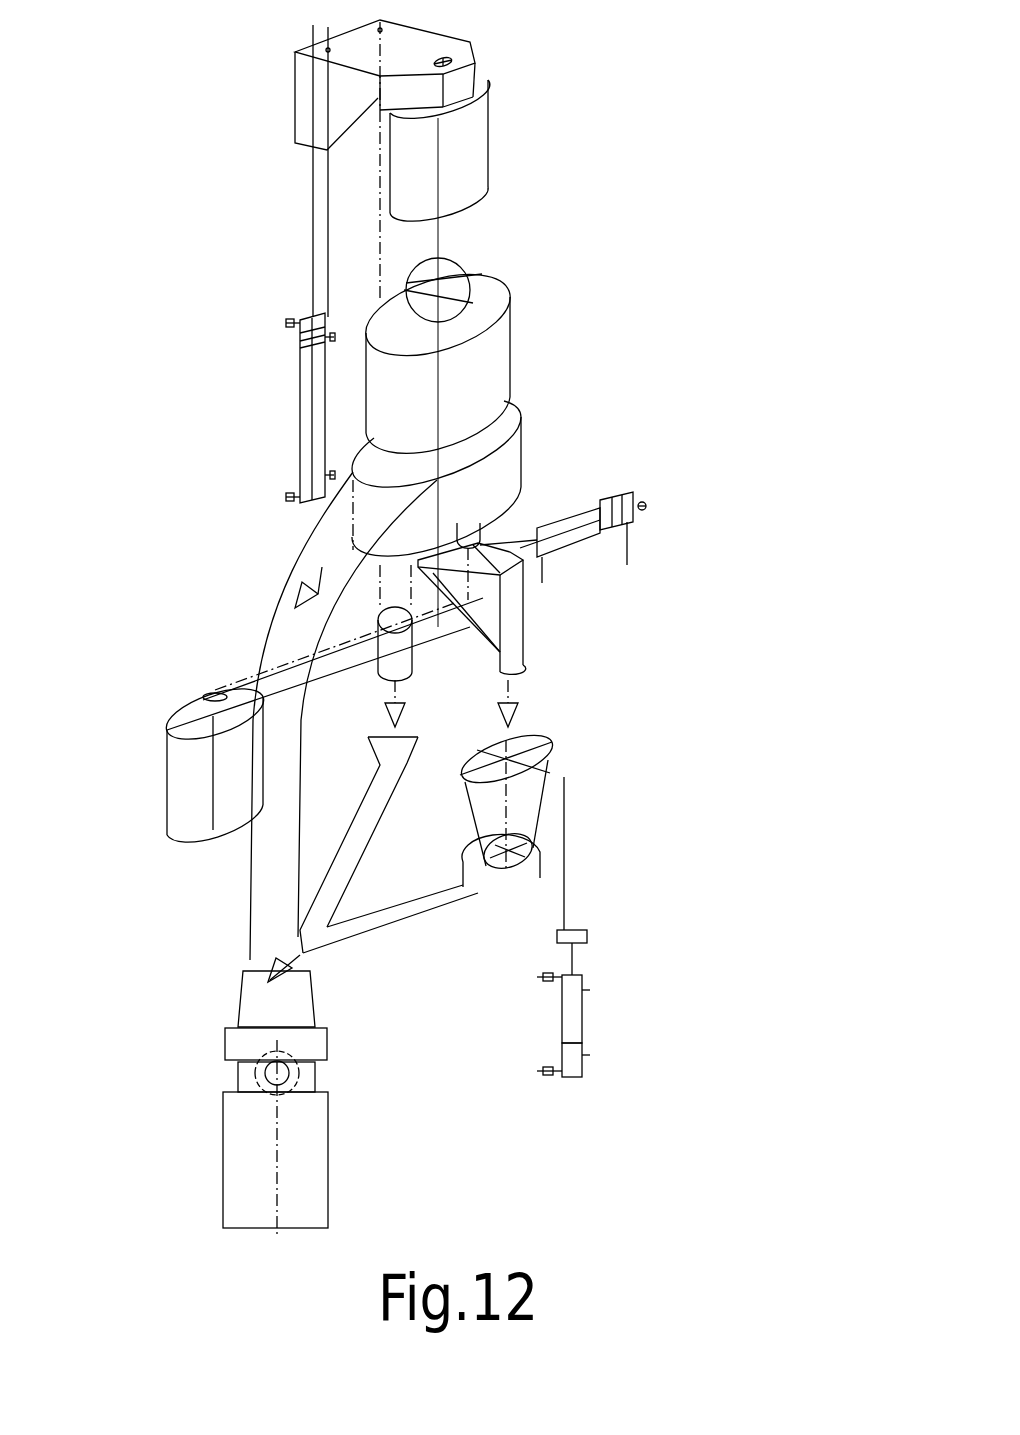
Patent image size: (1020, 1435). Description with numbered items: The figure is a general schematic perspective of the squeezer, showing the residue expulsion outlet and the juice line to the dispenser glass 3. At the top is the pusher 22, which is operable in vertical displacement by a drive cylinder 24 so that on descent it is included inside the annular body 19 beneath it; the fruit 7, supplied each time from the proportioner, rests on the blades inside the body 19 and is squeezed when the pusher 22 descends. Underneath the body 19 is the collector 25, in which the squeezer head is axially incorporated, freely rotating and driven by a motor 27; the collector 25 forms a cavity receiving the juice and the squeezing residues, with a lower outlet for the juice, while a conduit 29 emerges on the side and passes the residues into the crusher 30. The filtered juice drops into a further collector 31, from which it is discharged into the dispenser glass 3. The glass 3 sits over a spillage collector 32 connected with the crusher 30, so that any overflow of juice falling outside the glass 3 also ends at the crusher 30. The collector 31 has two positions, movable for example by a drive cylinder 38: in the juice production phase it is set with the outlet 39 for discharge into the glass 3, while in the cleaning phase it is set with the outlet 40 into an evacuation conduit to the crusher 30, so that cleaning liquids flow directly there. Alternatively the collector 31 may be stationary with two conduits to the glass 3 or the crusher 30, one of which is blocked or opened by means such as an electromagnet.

The pusher 22 is at (508, 124).
The fruit 7 is at (479, 255).
The annular body 19 is at (527, 329).
The collector 25 is at (537, 439).
The drive cylinder 24 is at (285, 403).
The drive cylinder 38 is at (590, 501).
The conduit 29 is at (271, 579).
The collector 31 is at (540, 615).
The outlet 39 is at (528, 691).
The motor 27 is at (148, 808).
The dispenser glass 3 is at (563, 764).
The spillage collector 32 is at (553, 887).
The outlet 40 is at (398, 733).
The crusher 30 is at (205, 1162).